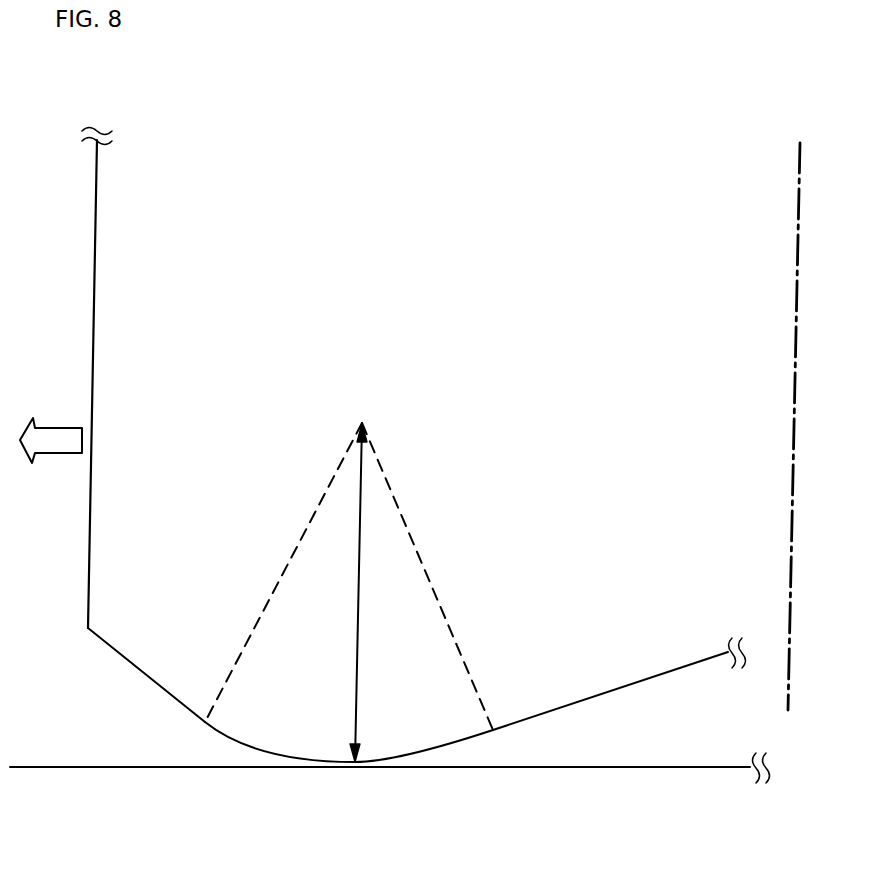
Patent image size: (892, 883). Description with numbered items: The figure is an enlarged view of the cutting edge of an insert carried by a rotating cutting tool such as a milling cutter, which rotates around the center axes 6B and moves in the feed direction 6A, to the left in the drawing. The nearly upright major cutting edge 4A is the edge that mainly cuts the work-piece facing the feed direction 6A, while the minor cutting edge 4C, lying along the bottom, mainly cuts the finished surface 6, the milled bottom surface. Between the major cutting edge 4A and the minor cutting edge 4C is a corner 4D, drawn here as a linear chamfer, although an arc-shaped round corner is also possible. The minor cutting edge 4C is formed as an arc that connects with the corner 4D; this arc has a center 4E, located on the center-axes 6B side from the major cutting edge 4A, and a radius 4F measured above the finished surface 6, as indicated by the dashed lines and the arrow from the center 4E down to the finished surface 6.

The major cutting edge 4A is at (130, 378).
The minor cutting edge 4C is at (435, 752).
The corner 4D is at (146, 671).
The center 4E is at (349, 576).
The radius 4F is at (375, 592).
The finished surface 6 is at (665, 768).
The feed direction 6A is at (51, 422).
The center axes 6B is at (785, 441).